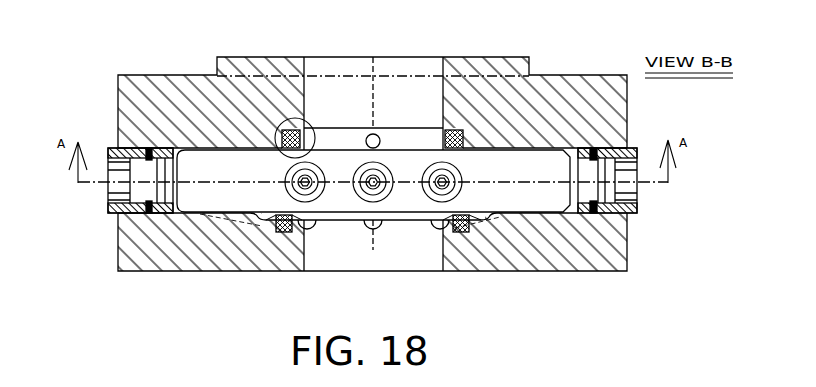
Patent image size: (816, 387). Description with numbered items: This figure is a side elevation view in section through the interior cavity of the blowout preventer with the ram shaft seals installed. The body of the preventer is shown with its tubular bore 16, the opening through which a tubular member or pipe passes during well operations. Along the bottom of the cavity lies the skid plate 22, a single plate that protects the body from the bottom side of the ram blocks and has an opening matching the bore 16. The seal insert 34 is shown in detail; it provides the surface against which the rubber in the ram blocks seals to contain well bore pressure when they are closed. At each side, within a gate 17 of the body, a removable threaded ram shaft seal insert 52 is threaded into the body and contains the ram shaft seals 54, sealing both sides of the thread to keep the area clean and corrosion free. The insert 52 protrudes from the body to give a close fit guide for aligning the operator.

The tubular bore 16 is at (380, 70).
The gate 17 is at (516, 162).
The skid plate 22 is at (400, 218).
The seal insert 34 is at (283, 132).
The ram shaft seal insert 52 is at (107, 212).
The ram shaft seals 54 is at (143, 155).